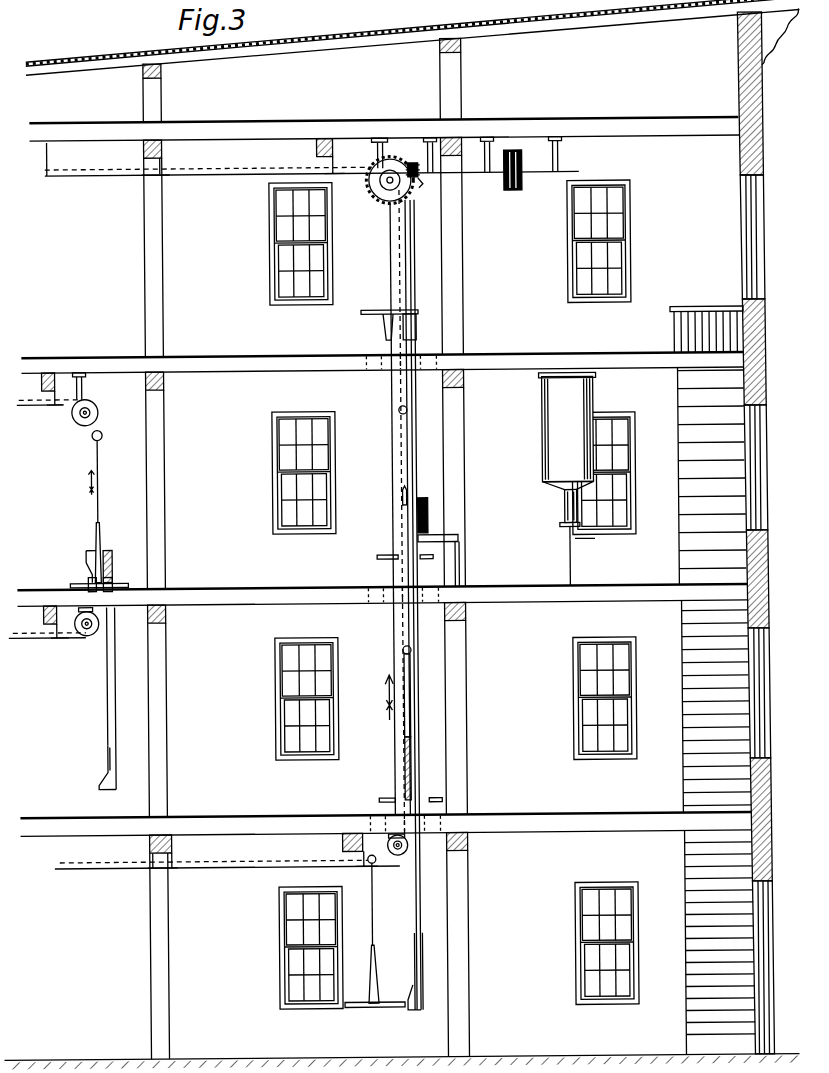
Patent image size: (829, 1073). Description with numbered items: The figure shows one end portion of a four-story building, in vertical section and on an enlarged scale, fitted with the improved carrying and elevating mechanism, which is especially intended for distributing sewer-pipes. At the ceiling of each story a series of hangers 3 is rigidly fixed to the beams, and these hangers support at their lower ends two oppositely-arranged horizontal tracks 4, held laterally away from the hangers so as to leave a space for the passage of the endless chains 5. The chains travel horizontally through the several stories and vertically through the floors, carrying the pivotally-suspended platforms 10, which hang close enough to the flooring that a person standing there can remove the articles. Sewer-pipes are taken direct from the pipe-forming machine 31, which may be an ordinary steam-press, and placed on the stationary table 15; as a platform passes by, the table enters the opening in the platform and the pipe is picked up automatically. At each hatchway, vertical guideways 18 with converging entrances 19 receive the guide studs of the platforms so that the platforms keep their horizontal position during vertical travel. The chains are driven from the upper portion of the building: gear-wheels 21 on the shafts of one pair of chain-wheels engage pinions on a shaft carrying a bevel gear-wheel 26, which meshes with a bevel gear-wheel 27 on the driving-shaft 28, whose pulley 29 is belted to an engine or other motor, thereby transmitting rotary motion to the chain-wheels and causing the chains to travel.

The hanger 3 is at (166, 851).
The horizontal track 4 is at (227, 878).
The endless chain 5 is at (214, 855).
The platform 10 is at (374, 935).
The stationary table 15 is at (452, 530).
The vertical guideway 18 is at (114, 722).
The converging entrance 19 is at (104, 777).
The gear-wheel 21 is at (390, 174).
The bevel gear-wheel 26 is at (411, 161).
The bevel gear-wheel 27 is at (424, 188).
The driving-shaft 28 is at (312, 180).
The pulley 29 is at (521, 167).
The pipe-forming machine 31 is at (590, 403).